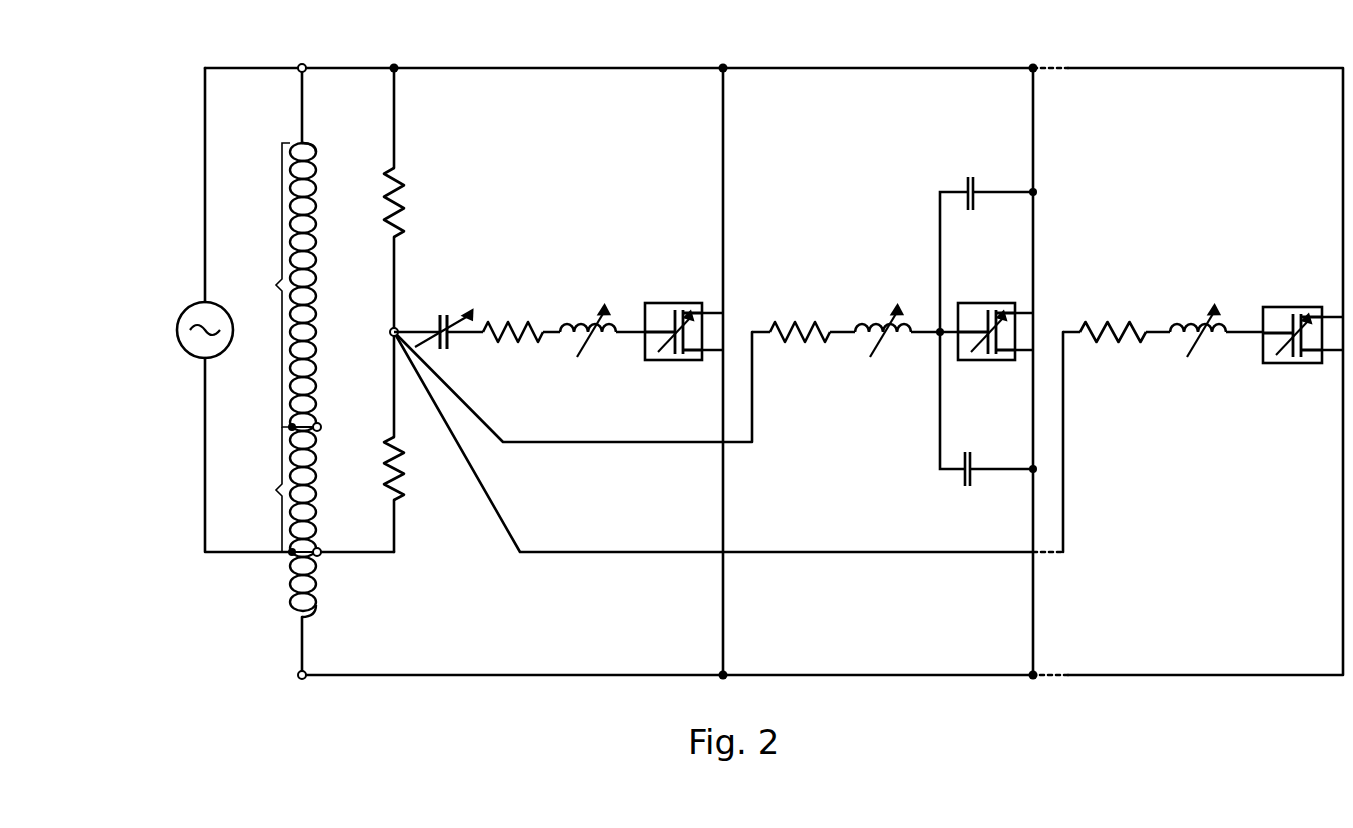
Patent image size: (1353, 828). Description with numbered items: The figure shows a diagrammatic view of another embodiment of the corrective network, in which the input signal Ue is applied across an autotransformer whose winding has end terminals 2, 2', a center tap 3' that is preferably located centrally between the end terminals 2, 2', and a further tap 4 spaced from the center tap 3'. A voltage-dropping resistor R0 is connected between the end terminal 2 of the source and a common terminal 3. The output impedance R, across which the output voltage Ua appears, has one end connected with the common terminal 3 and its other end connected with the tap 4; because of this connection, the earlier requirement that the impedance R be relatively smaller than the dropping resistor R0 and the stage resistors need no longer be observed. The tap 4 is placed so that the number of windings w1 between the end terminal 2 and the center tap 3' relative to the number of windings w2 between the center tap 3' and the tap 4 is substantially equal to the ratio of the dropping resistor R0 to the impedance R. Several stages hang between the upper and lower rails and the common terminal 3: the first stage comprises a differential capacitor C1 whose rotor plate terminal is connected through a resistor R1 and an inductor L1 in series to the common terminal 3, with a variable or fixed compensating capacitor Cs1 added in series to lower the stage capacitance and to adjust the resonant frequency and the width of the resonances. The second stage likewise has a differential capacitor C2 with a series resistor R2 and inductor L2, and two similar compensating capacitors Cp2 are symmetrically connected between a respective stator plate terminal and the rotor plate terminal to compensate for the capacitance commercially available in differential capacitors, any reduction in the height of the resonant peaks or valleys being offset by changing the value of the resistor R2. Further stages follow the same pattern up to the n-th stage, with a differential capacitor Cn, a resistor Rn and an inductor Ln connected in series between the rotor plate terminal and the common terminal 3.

The end terminal 2 is at (322, 54).
The end terminal 2' is at (323, 693).
The common terminal 3 is at (374, 330).
The center tap 3' is at (320, 414).
The tap 4 is at (320, 550).
The number of windings between end terminal 2 and center tap 3' w1 is at (266, 285).
The number of windings between center tap 3' and tap 4 w2 is at (264, 489).
The input signal Ue is at (240, 300).
The output voltage Ua is at (370, 485).
The voltage-dropping resistor R0 is at (400, 198).
The output impedance R is at (404, 480).
The compensating capacitor Cs1 is at (438, 320).
The resistor R1 is at (508, 322).
The inductor L1 is at (581, 322).
The differential capacitor C1 is at (665, 318).
The resistor R2 is at (796, 322).
The inductor L2 is at (874, 322).
The differential capacitor C2 is at (978, 318).
The compensating capacitors Cp2 is at (964, 190).
The resistor Rn is at (1094, 322).
The inductor Ln is at (1188, 322).
The differential capacitor Cn is at (1279, 320).